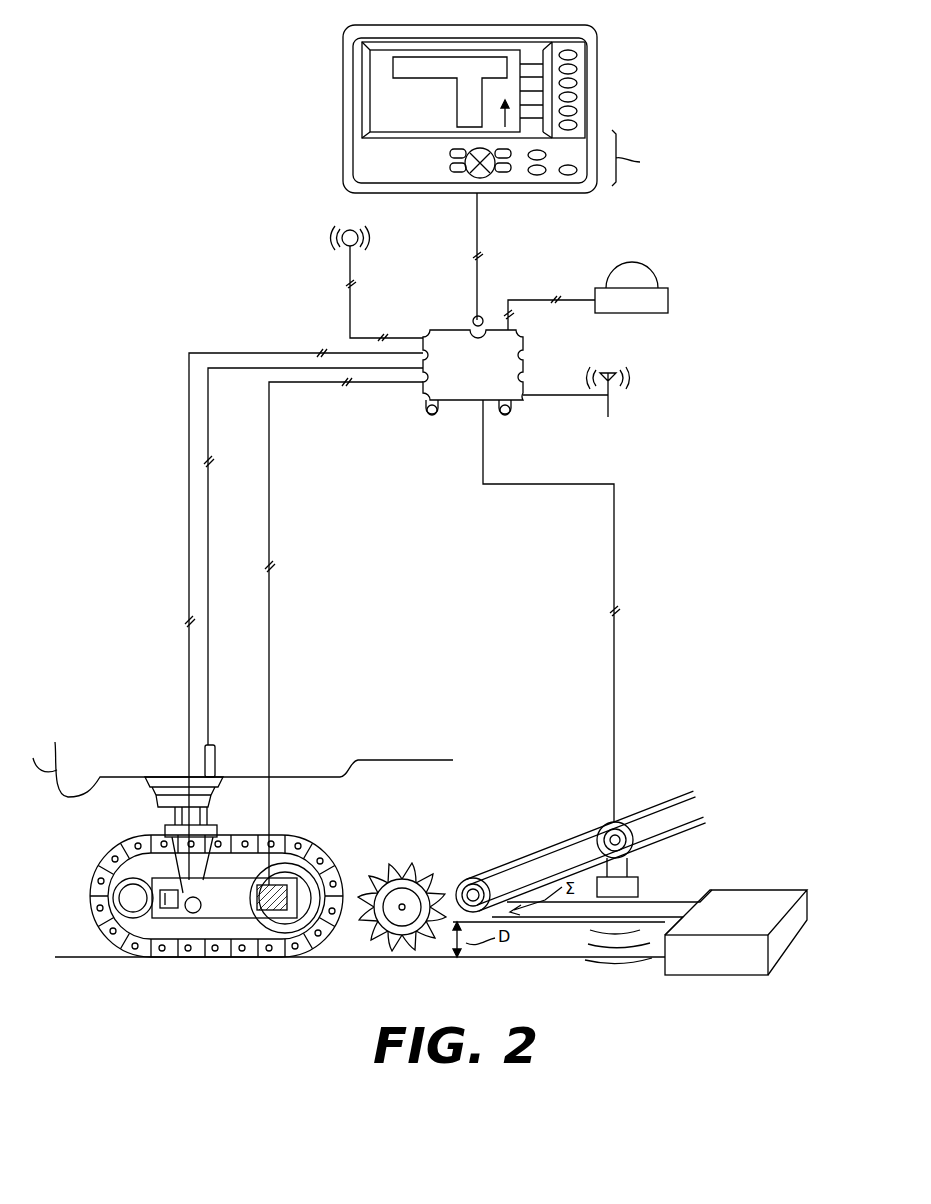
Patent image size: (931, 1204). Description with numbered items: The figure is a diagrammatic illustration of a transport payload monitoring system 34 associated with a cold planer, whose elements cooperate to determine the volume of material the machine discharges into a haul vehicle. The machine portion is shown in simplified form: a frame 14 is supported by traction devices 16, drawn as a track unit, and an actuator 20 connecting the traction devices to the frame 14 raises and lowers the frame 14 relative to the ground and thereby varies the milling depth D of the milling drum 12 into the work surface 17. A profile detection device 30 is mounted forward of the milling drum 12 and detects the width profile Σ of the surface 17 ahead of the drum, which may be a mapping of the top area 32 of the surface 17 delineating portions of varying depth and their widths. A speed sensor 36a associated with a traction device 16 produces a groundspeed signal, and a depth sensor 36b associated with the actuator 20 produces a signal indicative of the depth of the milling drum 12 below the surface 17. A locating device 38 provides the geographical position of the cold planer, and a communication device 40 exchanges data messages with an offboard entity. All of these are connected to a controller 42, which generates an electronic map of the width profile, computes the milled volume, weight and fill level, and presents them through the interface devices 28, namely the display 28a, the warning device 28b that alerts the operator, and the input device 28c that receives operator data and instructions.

The milling drum 12 is at (378, 870).
The frame 14 is at (239, 767).
The traction devices 16 is at (340, 935).
The work surface 17 is at (736, 925).
The actuators 20 is at (203, 867).
The interface devices 28 is at (470, 174).
The display 28a is at (390, 66).
The warning device 28b is at (362, 238).
The input device 28c is at (640, 162).
The profile detection device 30 is at (640, 877).
The top area 32 is at (736, 908).
The transport payload monitoring system 34 is at (107, 166).
The speed sensor 36a is at (257, 897).
The depth sensor 36b is at (217, 757).
The locating device 38 is at (641, 309).
The communication device 40 is at (610, 408).
The controller 42 is at (479, 373).